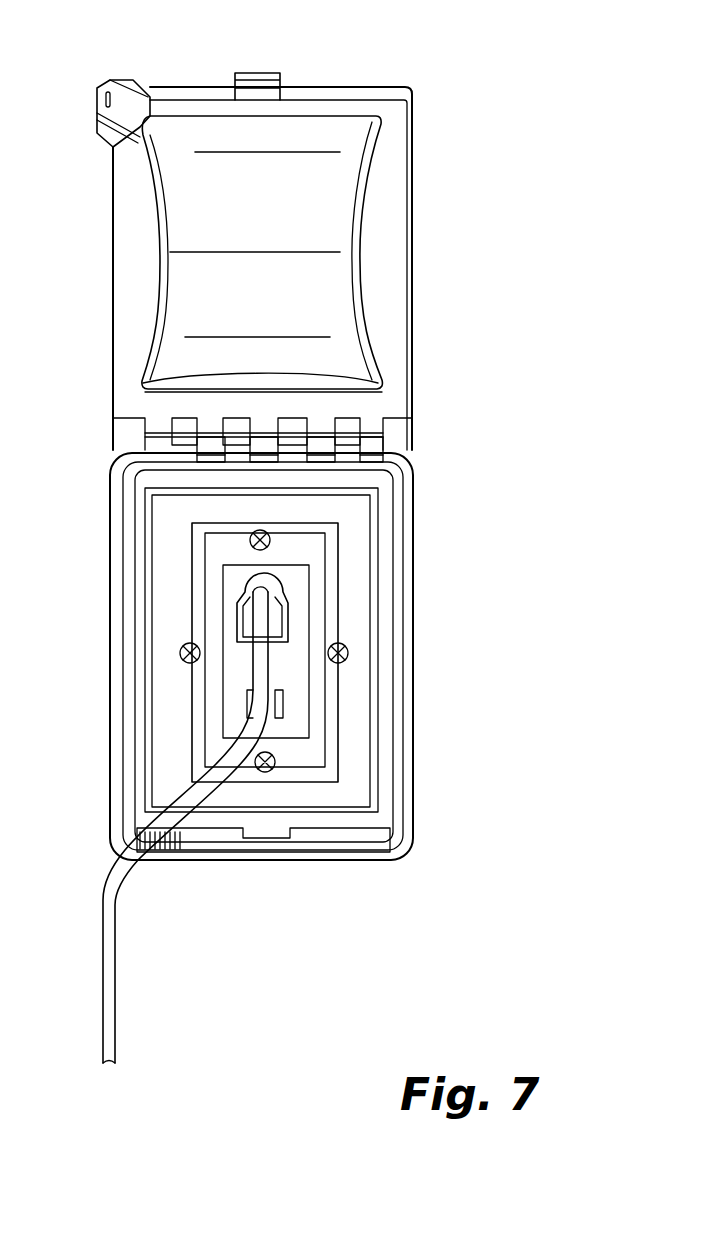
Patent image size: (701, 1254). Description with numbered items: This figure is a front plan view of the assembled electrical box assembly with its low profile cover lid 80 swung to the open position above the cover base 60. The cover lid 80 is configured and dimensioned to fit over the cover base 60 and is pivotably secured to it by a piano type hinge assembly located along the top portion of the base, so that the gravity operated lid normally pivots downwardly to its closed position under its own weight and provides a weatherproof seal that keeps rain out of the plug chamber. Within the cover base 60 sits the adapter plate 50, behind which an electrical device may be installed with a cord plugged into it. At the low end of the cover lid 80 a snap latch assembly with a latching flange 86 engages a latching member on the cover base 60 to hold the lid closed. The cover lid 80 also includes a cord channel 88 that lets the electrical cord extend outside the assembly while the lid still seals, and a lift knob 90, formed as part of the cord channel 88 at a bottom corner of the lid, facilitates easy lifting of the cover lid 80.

The adapter plate 50 is at (298, 768).
The cover base 60 is at (421, 580).
The cover lid 80 is at (428, 130).
The latching flange 86 is at (262, 72).
The cord channel 88 is at (113, 118).
The lift knob 90 is at (107, 80).